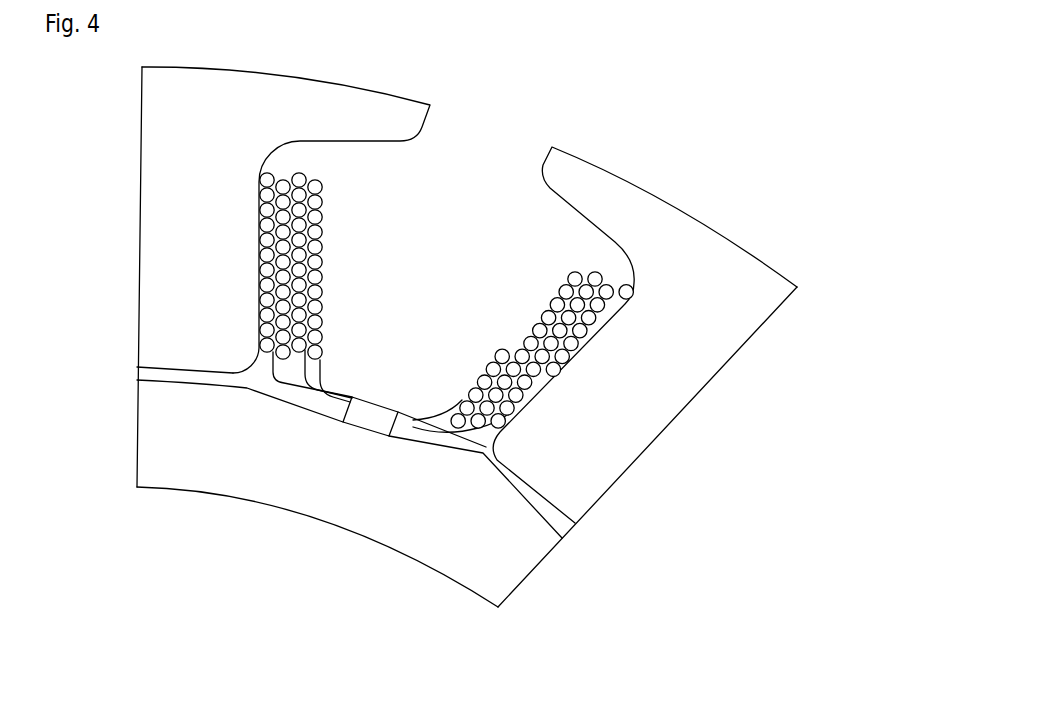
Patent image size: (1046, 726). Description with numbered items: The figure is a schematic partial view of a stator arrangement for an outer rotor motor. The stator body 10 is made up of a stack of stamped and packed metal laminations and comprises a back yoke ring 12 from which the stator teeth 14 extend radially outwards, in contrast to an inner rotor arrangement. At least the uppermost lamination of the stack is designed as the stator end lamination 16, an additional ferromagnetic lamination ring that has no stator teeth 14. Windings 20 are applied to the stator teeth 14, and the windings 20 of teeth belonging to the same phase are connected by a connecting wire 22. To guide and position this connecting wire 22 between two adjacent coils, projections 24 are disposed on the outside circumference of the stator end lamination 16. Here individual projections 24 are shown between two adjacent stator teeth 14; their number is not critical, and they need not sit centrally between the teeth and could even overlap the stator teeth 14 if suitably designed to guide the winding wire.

The stator body 10 is at (691, 201).
The back yoke ring 12 is at (482, 552).
The stator teeth 14 is at (697, 267).
The stator end lamination 16 is at (242, 467).
The windings 20 is at (572, 331).
The connecting wire 22 is at (326, 380).
The projections 24 is at (376, 422).